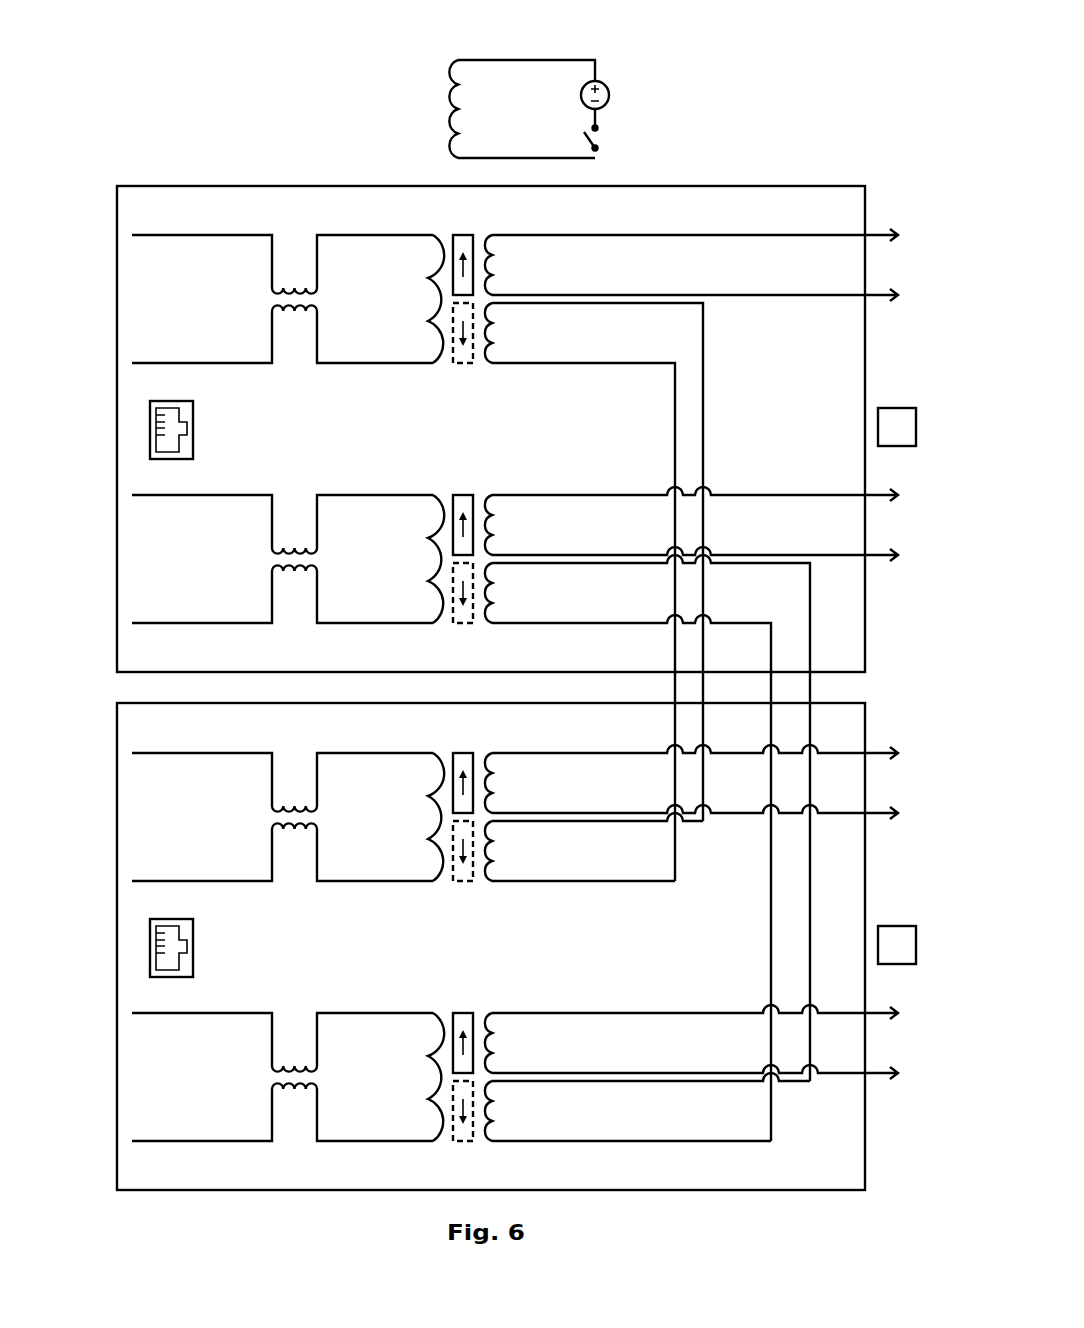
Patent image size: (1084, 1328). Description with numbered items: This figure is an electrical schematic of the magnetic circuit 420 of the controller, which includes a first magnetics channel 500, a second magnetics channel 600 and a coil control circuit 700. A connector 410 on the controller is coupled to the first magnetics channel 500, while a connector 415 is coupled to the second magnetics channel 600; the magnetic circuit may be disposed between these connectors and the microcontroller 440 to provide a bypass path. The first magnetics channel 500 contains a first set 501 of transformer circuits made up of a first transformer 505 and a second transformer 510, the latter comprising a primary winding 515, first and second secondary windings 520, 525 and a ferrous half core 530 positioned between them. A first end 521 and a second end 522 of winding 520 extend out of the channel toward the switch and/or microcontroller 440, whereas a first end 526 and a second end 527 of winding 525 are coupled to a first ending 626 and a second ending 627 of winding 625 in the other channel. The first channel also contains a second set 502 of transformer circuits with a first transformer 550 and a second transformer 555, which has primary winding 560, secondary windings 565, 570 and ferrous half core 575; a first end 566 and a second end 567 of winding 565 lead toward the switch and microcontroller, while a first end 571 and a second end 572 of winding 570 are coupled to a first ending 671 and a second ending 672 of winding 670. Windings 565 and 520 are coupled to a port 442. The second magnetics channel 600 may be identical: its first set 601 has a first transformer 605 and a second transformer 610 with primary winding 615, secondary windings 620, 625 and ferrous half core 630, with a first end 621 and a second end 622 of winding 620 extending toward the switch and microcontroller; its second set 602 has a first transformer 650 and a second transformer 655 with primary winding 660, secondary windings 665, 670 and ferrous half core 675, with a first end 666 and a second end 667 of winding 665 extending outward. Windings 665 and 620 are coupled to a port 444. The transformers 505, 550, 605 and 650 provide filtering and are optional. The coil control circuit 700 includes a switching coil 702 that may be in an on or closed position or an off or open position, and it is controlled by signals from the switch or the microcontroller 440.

The magnetic circuit 420 is at (144, 103).
The coil control circuit 700 is at (431, 40).
The switching coil 702 is at (431, 100).
The first magnetics channel 500 is at (118, 173).
The first set of transformer circuits 501 is at (138, 224).
The first transformer 505 is at (261, 295).
The second transformer 510 is at (422, 214).
The winding 515 is at (441, 283).
The winding 520 is at (488, 280).
The winding 525 is at (488, 347).
The ferrous half core 530 is at (476, 218).
The first end of winding 520 521 is at (650, 235).
The second end of winding 520 522 is at (650, 295).
The first end of winding 525 526 is at (660, 305).
The second end of winding 525 527 is at (660, 366).
The connector 410 is at (150, 418).
The microcontroller 440 is at (895, 408).
The port 442 is at (768, 275).
The second set of transformer circuits 502 is at (138, 485).
The first transformer 550 is at (261, 555).
The second transformer 555 is at (422, 474).
The winding 560 is at (441, 543).
The winding 565 is at (488, 540).
The winding 570 is at (488, 608).
The ferrous half core 575 is at (476, 478).
The first end of winding 565 566 is at (650, 493).
The second end of winding 565 567 is at (650, 555).
The first end of winding 570 571 is at (657, 565).
The second end of winding 570 572 is at (657, 625).
The second magnetics channel 600 is at (118, 692).
The first set of transformer circuits 601 is at (136, 739).
The first transformer 605 is at (261, 813).
The second transformer 610 is at (422, 732).
The winding 615 is at (441, 801).
The winding 620 is at (488, 798).
The winding 625 is at (488, 866).
The ferrous half core 630 is at (476, 736).
The first end of winding 620 621 is at (650, 752).
The second end of winding 620 622 is at (650, 813).
The first ending of winding 625 626 is at (657, 823).
The second ending of winding 625 627 is at (657, 883).
The connector 415 is at (150, 936).
The port 444 is at (904, 776).
The second set of transformer circuits 602 is at (138, 1003).
The first transformer 650 is at (261, 1073).
The second transformer 655 is at (422, 992).
The winding 660 is at (441, 1061).
The winding 665 is at (488, 1058).
The winding 670 is at (488, 1126).
The ferrous half core 675 is at (476, 996).
The first end of winding 665 666 is at (650, 1011).
The second end of winding 665 667 is at (650, 1073).
The first ending of winding 670 671 is at (657, 1083).
The second ending of winding 670 672 is at (657, 1143).